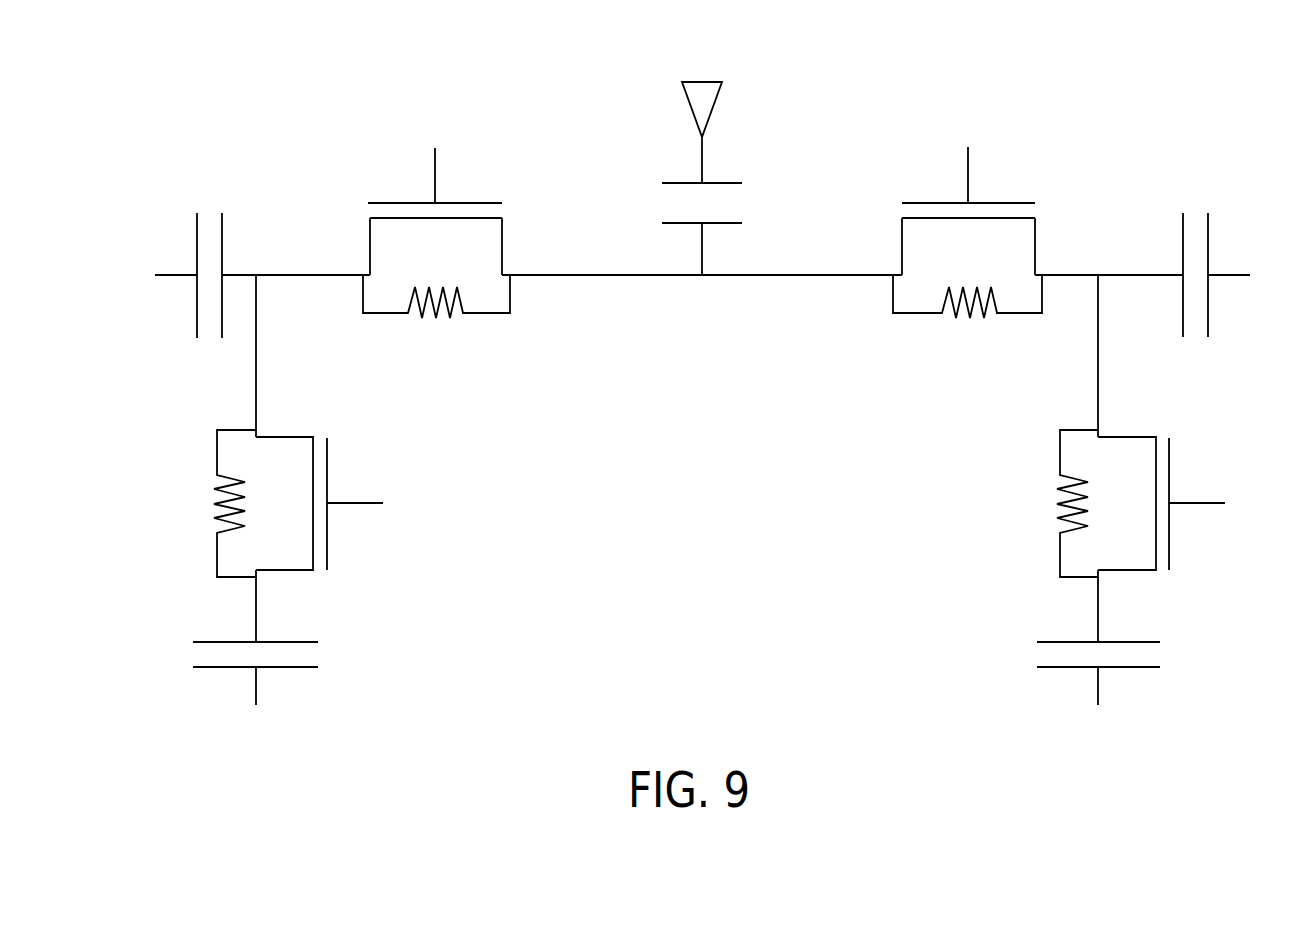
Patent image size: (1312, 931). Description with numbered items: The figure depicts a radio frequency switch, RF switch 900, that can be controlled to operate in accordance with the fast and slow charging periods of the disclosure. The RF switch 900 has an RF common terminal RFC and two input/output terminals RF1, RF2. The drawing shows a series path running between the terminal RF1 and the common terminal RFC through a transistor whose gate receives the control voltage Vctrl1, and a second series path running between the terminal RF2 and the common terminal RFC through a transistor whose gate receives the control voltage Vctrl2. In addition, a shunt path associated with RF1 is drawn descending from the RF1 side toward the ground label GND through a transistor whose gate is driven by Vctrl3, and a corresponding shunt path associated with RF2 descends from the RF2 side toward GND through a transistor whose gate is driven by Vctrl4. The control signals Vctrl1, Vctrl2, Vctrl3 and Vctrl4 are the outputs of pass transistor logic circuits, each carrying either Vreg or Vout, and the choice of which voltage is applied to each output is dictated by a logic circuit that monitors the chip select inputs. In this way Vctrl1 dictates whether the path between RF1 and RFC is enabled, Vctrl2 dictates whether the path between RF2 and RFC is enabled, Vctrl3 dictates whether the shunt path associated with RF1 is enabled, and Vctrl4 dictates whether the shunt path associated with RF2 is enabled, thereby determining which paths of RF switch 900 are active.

The RF switch 900 is at (701, 395).
The input/output terminal RF1 is at (241, 275).
The input/output terminal RF2 is at (1162, 275).
The RF common terminal RFC is at (702, 162).
The control voltage output Vctrl1 is at (436, 218).
The control voltage output Vctrl2 is at (967, 217).
The control voltage output Vctrl3 is at (326, 503).
The control voltage output Vctrl4 is at (1168, 503).
The ground shunt capacitors GND is at (676, 656).